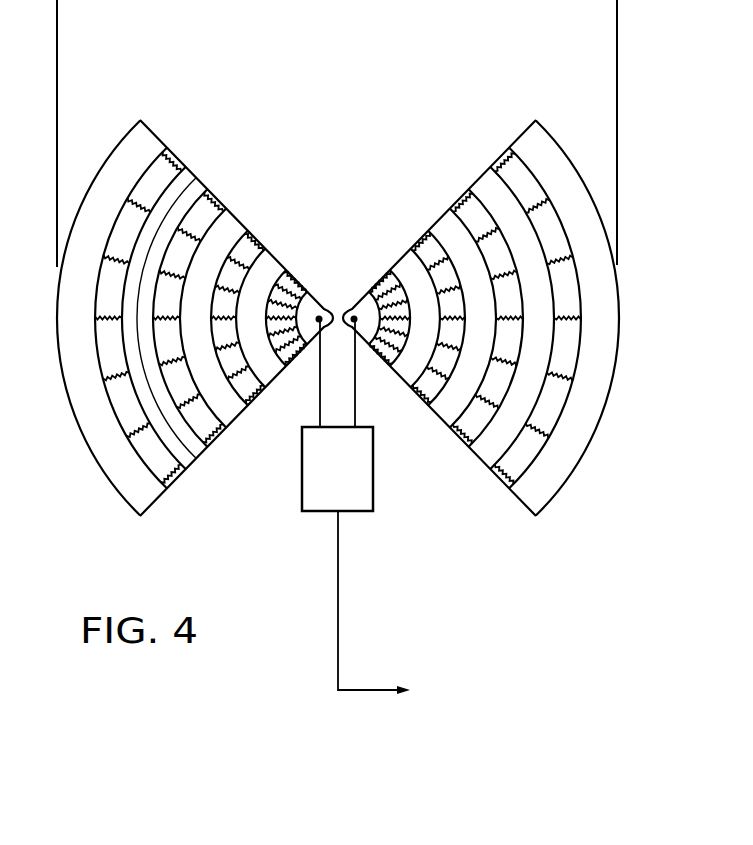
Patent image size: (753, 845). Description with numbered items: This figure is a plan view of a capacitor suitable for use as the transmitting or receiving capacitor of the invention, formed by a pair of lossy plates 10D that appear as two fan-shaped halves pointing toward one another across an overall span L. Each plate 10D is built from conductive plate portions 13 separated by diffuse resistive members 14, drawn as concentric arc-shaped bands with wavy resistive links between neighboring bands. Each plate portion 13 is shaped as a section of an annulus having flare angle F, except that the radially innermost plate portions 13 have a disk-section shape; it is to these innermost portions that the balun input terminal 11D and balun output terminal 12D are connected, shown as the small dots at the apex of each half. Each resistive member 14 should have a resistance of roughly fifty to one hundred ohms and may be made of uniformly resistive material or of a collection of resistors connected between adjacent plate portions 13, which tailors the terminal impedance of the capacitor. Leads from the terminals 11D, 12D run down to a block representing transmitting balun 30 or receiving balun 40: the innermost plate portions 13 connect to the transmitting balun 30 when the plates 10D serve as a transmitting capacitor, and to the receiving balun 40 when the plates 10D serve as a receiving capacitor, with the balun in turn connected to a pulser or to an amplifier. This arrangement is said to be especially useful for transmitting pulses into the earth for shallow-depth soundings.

The lossy plate 10D is at (338, 325).
The balun input terminal 11D is at (352, 316).
The balun output terminal 12D is at (318, 316).
The conductive plate portion 13 is at (272, 366).
The diffuse resistive member 14 is at (177, 153).
The transmitting balun 30 is at (457, 580).
The receiving balun 40 is at (337, 469).
The flare angle F is at (162, 318).
The length of assembly L is at (617, 30).